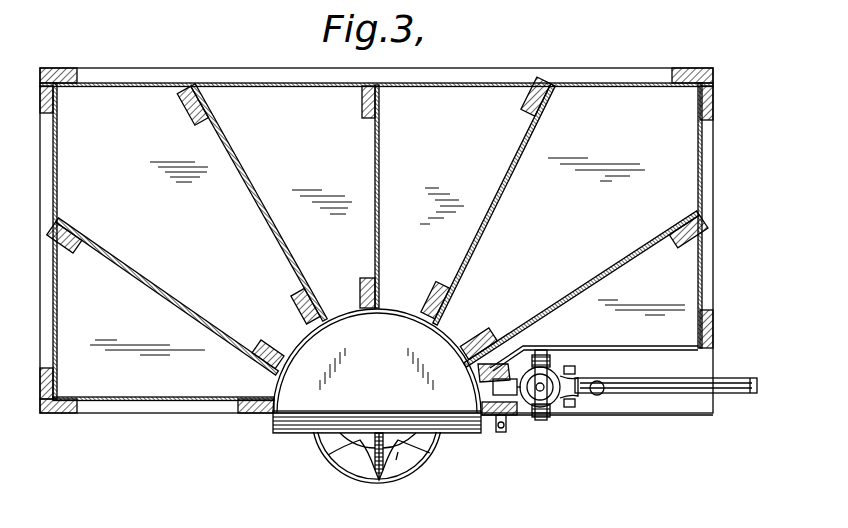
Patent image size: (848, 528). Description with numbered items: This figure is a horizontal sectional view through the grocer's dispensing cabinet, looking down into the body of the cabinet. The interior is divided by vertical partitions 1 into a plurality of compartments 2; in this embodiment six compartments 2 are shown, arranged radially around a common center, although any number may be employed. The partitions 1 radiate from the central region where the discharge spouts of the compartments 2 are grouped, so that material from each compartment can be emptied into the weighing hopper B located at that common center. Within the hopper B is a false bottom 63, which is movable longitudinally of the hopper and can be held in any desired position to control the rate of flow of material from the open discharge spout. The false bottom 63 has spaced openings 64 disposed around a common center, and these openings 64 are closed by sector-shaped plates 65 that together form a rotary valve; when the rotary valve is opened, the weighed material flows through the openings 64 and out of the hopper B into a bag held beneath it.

The vertical partitions 1 is at (269, 229).
The compartments 2 is at (376, 241).
The false bottom 63 is at (355, 470).
The spaced openings 64 is at (330, 455).
The sector-shaped plates 65 is at (430, 453).
The weighing hopper B is at (420, 474).